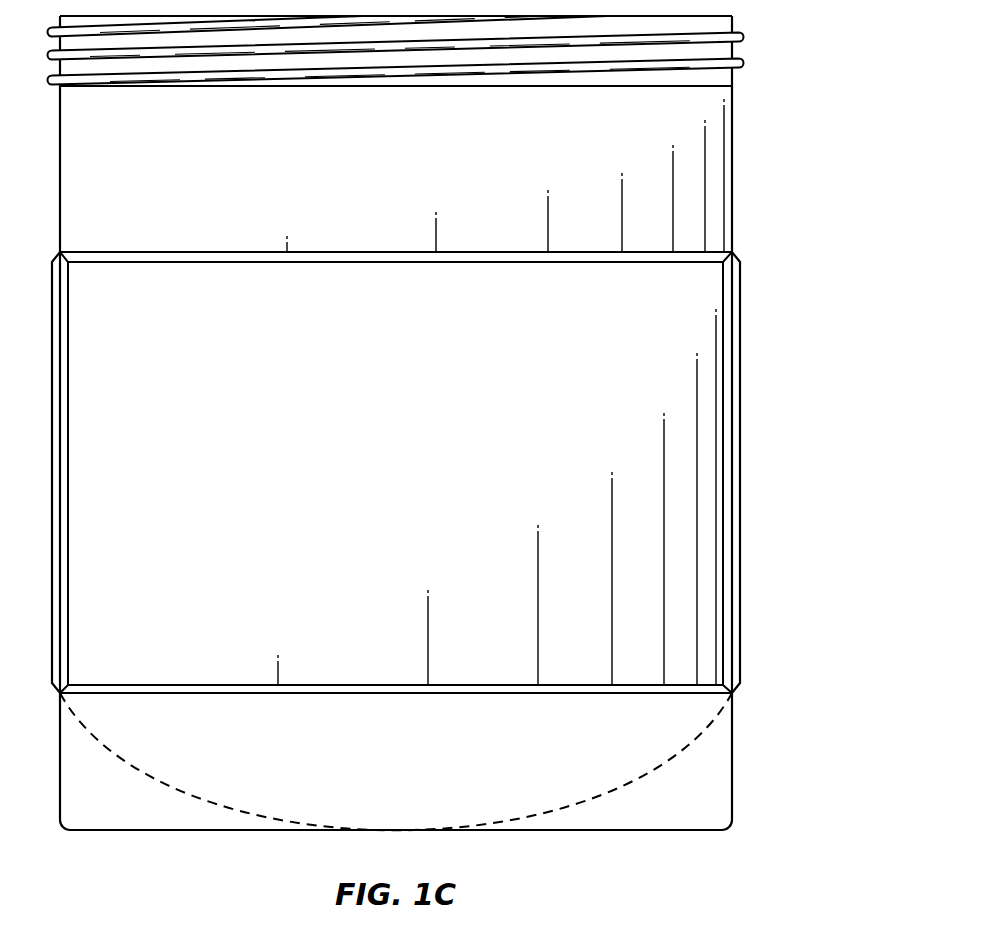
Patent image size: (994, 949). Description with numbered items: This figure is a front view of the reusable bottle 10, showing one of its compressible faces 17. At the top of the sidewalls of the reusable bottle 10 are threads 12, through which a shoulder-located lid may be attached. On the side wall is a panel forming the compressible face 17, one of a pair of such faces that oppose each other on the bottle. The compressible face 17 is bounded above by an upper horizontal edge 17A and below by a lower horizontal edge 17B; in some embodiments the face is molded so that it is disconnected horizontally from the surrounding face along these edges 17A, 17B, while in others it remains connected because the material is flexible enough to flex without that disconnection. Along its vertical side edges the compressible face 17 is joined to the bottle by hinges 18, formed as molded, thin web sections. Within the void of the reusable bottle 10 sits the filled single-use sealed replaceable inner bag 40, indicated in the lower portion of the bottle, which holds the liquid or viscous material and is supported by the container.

The reusable bottle 10 is at (733, 106).
The threads 12 is at (741, 50).
The compressible face 17 is at (497, 497).
The upper horizontal edge 17A is at (680, 252).
The lower horizontal edge 17B is at (688, 695).
The hinge 18 is at (741, 358).
The single-use sealed replaceable inner bag 40 is at (627, 778).